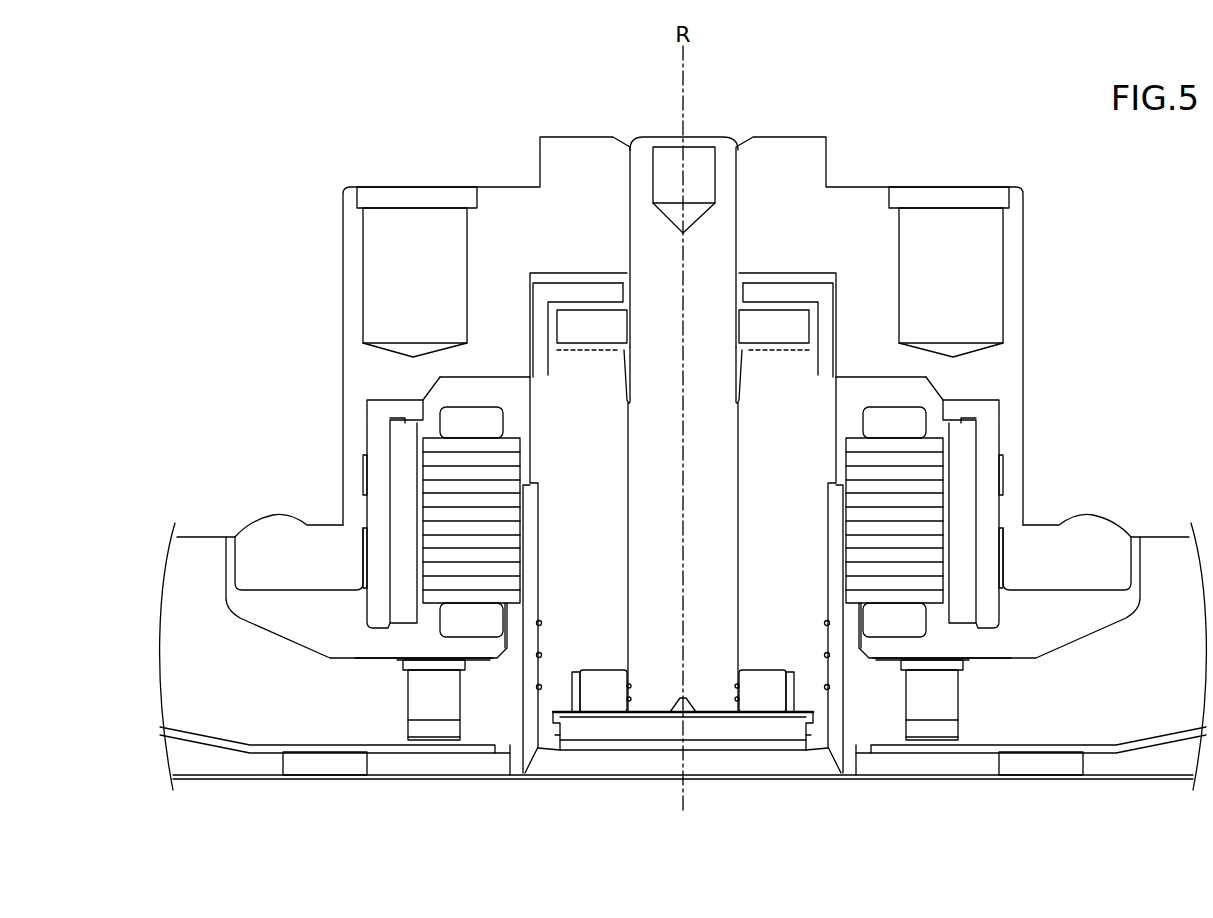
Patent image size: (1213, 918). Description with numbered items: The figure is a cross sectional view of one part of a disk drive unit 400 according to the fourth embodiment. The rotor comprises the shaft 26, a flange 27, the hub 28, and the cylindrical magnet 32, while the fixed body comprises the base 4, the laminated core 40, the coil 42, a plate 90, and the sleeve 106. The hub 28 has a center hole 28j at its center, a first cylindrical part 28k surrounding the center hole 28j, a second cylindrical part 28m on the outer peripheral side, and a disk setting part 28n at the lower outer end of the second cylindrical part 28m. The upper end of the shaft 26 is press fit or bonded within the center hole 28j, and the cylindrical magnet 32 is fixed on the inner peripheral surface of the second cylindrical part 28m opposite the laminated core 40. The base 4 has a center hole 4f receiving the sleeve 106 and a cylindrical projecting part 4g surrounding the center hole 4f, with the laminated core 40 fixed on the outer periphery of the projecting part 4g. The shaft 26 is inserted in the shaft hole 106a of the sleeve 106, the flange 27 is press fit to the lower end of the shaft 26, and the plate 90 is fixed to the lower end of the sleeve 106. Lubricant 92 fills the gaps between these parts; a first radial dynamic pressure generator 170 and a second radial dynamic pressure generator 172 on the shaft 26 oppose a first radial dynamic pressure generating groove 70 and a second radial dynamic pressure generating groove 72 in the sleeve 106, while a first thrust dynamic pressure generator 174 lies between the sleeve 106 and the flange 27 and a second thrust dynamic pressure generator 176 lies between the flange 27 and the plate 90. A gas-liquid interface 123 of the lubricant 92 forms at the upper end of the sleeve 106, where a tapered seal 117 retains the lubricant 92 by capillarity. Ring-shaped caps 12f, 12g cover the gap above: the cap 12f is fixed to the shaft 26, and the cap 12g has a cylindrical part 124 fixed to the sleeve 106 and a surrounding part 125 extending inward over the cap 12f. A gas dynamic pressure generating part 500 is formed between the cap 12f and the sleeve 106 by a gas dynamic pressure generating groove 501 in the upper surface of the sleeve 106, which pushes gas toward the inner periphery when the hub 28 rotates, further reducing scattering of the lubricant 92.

The disk drive unit 400 is at (201, 64).
The hub 28 is at (503, 200).
The first cylindrical part 28k is at (578, 192).
The center hole 28j is at (737, 210).
The second cylindrical part 28m is at (370, 377).
The disk setting part 28n is at (275, 545).
The base 4 is at (208, 707).
The center hole 4f is at (825, 748).
The cylindrical projecting part 4g is at (523, 620).
The cylindrical magnet 32 is at (400, 612).
The laminated core 40 is at (438, 473).
The coil 42 is at (460, 431).
The cap 12f is at (602, 328).
The cap 12g is at (580, 244).
The cylindrical part 124 is at (540, 343).
The surrounding part 125 is at (565, 293).
The gas dynamic pressure generating part 500 is at (639, 346).
The gas dynamic pressure generating groove 501 is at (640, 352).
The tapered seal 117 is at (623, 367).
The gas-liquid interface 123 is at (623, 380).
The lubricant 92 is at (623, 397).
The first radial dynamic pressure generator 170 is at (623, 410).
The first radial dynamic pressure generating groove 70 is at (631, 453).
The second radial dynamic pressure generating groove 72 is at (632, 613).
The second radial dynamic pressure generator 172 is at (627, 580).
The first thrust dynamic pressure generator 174 is at (623, 668).
The second thrust dynamic pressure generator 176 is at (623, 718).
The flange 27 is at (618, 695).
The plate 90 is at (635, 735).
The shaft 26 is at (663, 695).
The sleeve 106 is at (558, 670).
The shaft hole 106a is at (733, 627).